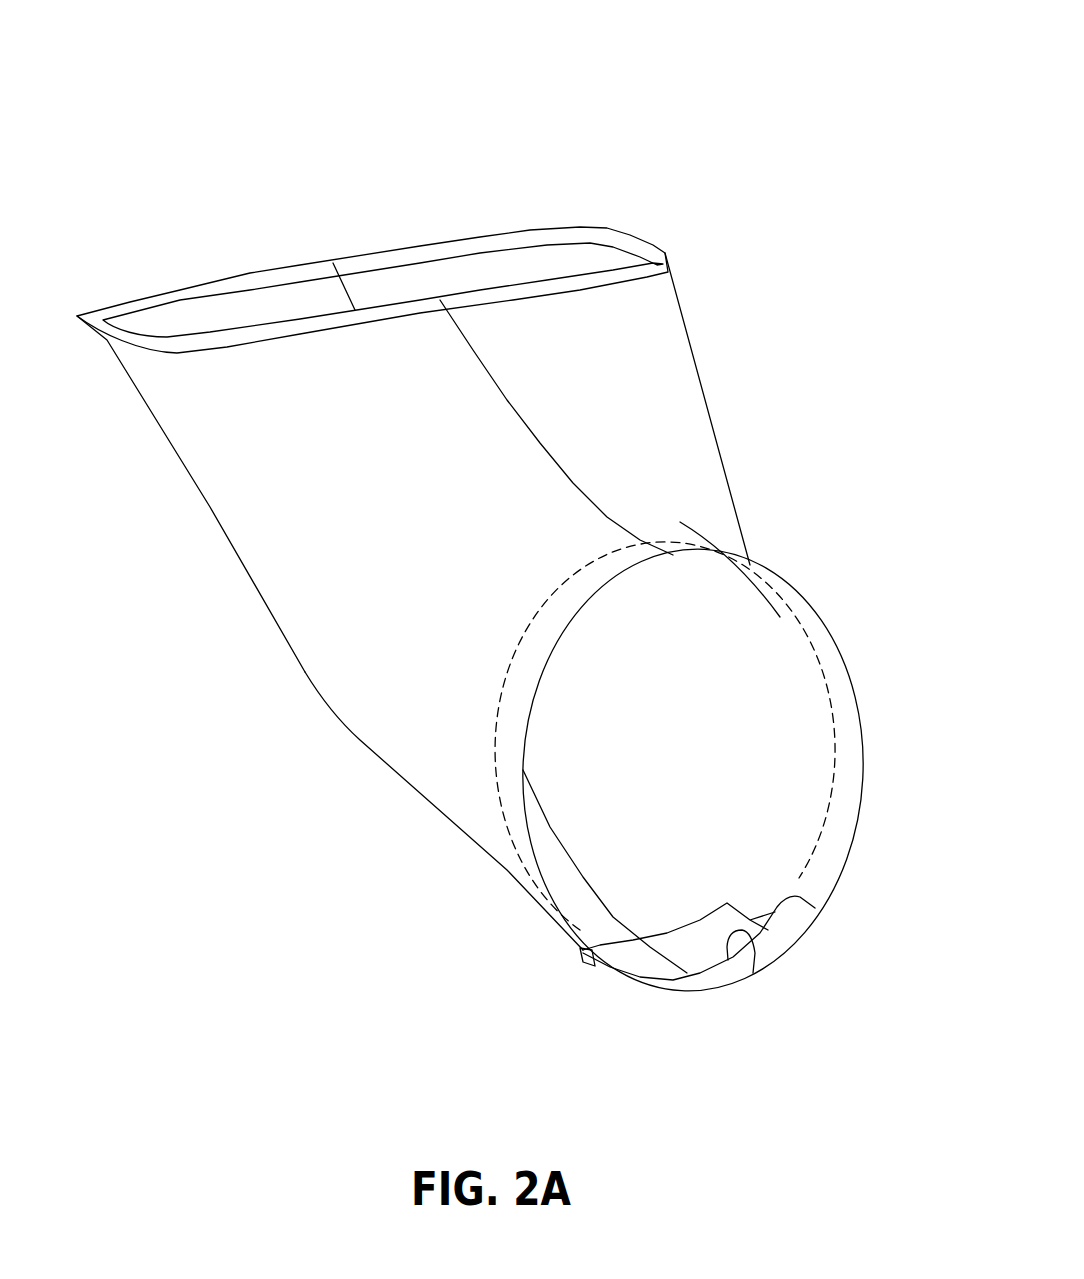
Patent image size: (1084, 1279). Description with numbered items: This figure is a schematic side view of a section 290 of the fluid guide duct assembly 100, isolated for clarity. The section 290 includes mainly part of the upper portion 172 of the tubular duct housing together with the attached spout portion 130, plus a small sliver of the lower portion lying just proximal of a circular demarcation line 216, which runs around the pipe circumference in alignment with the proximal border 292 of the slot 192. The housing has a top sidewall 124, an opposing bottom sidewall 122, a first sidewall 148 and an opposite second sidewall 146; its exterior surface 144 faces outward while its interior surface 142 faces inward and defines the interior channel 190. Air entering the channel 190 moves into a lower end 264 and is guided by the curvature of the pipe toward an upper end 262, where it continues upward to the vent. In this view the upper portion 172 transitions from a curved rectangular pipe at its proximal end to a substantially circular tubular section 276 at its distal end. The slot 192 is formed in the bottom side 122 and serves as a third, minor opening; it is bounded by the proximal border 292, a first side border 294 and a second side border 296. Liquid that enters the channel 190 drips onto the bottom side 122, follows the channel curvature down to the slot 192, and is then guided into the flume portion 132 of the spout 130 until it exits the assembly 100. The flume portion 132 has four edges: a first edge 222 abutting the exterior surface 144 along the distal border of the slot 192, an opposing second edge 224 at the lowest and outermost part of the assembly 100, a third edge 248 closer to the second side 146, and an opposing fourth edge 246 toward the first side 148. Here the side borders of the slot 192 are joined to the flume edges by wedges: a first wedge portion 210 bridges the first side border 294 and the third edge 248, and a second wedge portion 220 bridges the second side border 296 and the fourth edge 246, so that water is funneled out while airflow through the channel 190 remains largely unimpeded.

The assembly 100 is at (672, 100).
The section 290 is at (239, 172).
The upper end 262 is at (400, 290).
The top sidewall 124 is at (624, 369).
The upper portion 172 is at (728, 371).
The second sidewall 146 is at (745, 414).
The exterior surface 144 is at (652, 521).
The tubular section 276 is at (840, 627).
The bottom sidewall 122 is at (165, 525).
The first sidewall 148 is at (295, 574).
The interior channel 190 is at (677, 693).
The lower end 264 is at (562, 703).
The circular demarcation line 216 is at (829, 825).
The second wedge portion 220 is at (815, 908).
The interior surface 142 is at (780, 930).
The first edge 222 is at (672, 933).
The slot 192 is at (665, 960).
The second side border 296 is at (743, 903).
The fourth edge 246 is at (748, 916).
The proximal border 292 is at (753, 973).
The first side border 294 is at (579, 956).
The third edge 248 is at (583, 960).
The first wedge portion 210 is at (583, 962).
The flume portion 132 is at (614, 1008).
The spout portion 130 is at (648, 1028).
The second edge 224 is at (683, 995).